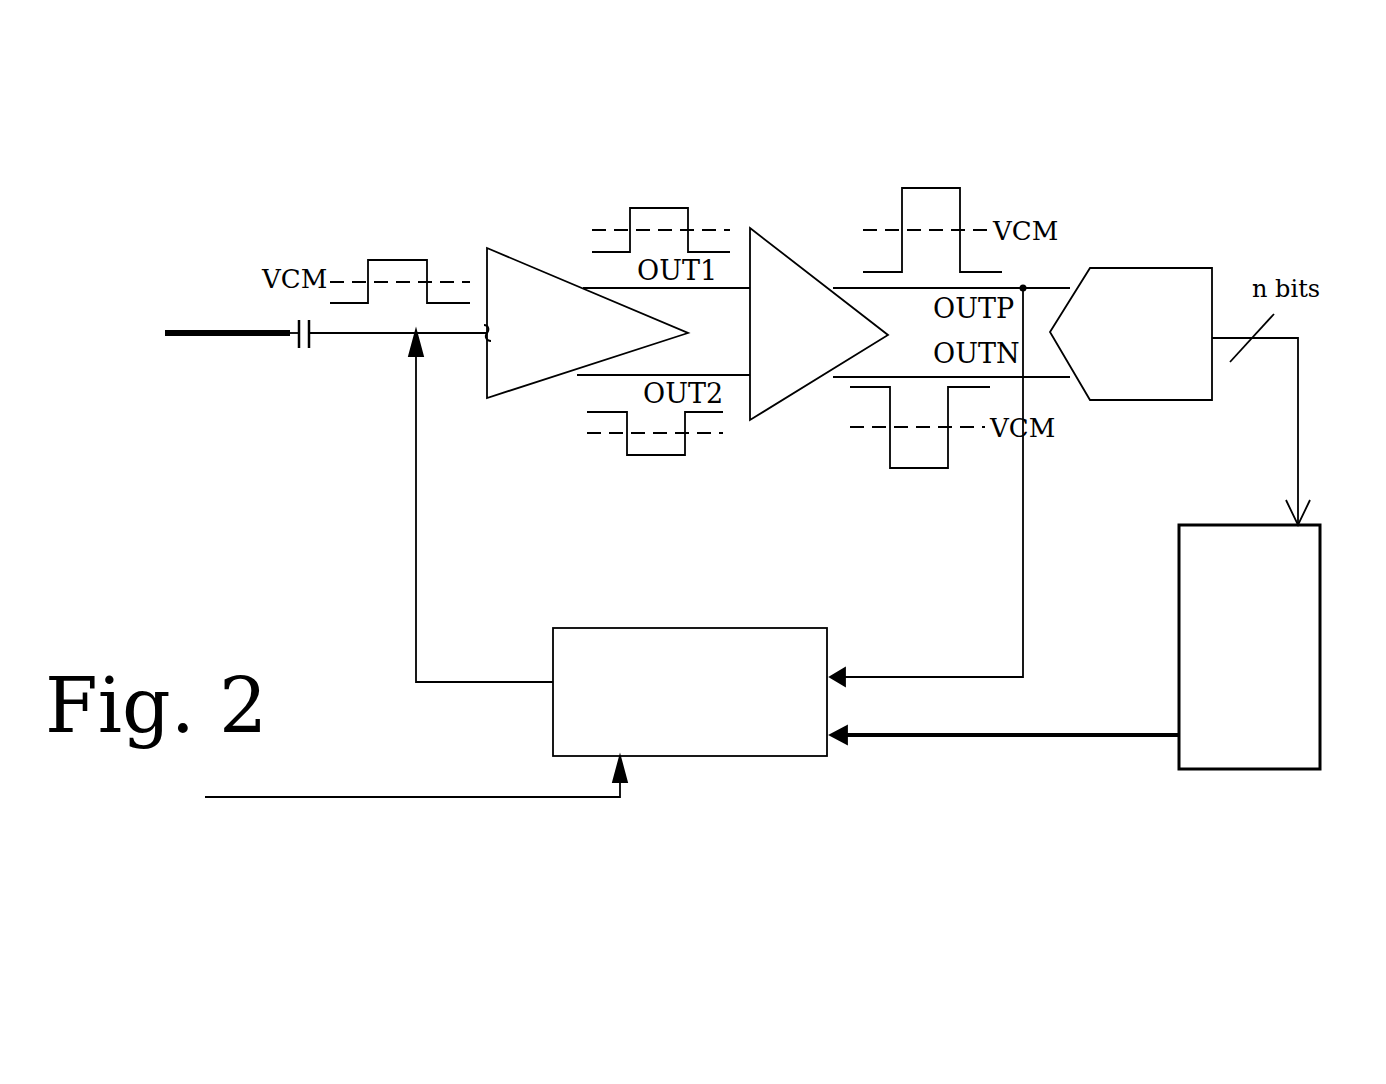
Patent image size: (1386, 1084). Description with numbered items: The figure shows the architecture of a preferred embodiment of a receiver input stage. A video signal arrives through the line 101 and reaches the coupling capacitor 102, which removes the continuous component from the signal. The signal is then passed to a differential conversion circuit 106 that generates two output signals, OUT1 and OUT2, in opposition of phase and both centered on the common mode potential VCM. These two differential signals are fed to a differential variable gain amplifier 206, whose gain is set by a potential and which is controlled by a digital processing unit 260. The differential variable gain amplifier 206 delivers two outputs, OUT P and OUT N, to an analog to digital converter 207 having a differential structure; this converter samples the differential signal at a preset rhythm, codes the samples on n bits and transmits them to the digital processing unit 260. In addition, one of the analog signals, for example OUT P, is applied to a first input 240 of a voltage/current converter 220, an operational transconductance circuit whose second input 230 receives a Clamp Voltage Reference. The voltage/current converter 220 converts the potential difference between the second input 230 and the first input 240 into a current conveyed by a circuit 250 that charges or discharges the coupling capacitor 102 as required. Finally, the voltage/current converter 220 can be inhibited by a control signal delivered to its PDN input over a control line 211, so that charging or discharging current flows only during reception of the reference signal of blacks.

The line 101 is at (207, 328).
The coupling capacitor 102 is at (298, 322).
The differential conversion circuit 106 is at (488, 248).
The differential variable gain amplifier 206 is at (755, 230).
The analog to digital converter 207 is at (1117, 268).
The control line 211 is at (415, 797).
The voltage/current converter 220 is at (801, 628).
The second input 230 is at (993, 737).
The first input 240 is at (1023, 540).
The circuit 250 is at (465, 682).
The digital processing unit 260 is at (1290, 770).